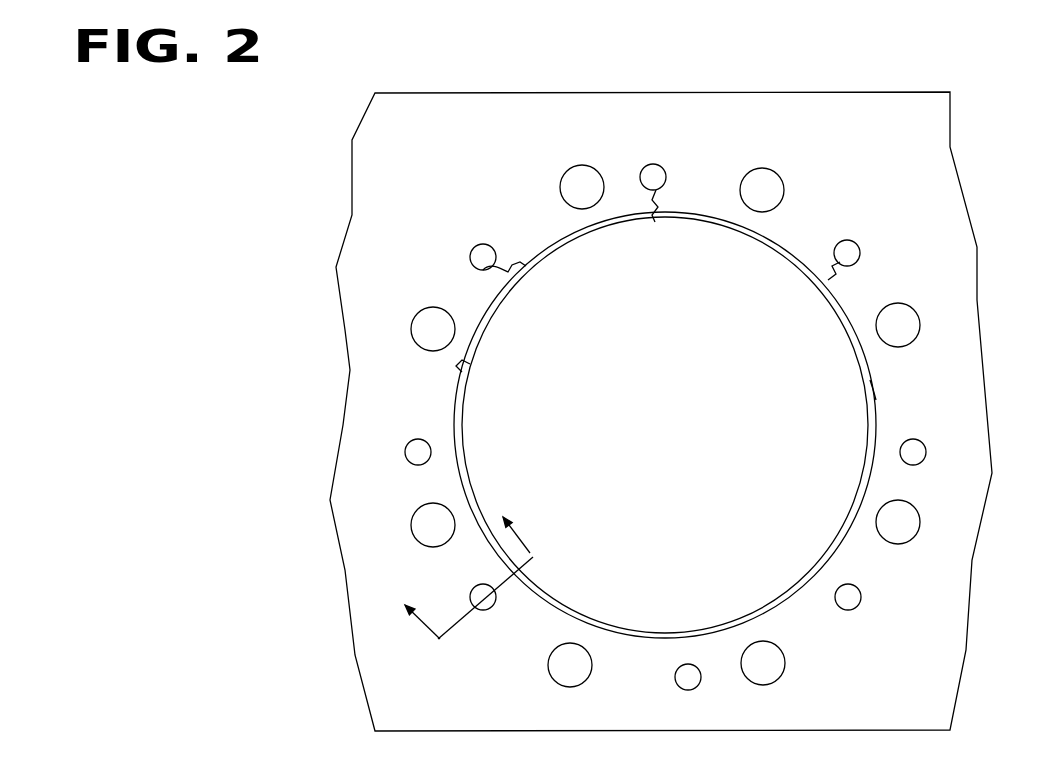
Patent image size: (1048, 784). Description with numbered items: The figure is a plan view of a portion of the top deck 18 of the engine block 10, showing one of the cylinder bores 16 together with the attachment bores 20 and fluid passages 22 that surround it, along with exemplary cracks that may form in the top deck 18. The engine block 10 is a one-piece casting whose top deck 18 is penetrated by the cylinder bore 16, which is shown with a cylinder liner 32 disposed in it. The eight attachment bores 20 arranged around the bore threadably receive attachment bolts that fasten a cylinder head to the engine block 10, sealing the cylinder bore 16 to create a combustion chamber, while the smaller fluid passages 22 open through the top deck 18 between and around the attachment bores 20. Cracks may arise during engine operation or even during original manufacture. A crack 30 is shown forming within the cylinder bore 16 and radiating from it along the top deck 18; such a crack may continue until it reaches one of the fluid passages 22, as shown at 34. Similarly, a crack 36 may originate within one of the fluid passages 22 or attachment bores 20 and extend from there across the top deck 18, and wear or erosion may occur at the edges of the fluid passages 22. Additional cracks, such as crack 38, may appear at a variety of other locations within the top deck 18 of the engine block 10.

The engine block 10 is at (665, 410).
The cylinder bore 16 is at (667, 418).
The top deck 18 is at (462, 107).
The attachment bores 20 is at (772, 672).
The fluid passages 22 is at (645, 166).
The crack 30 is at (518, 267).
The cylinder liner 32 is at (875, 395).
The crack extension to fluid passage 34 is at (652, 220).
The crack 36 is at (830, 270).
The crack 38 is at (430, 395).